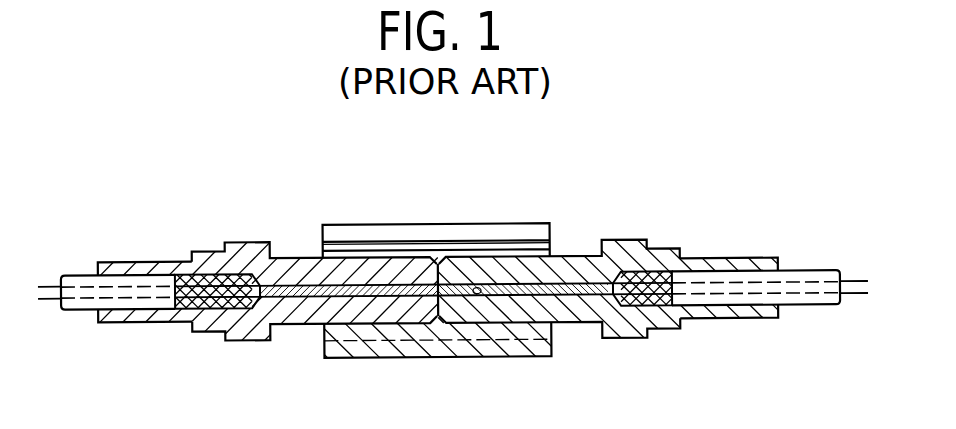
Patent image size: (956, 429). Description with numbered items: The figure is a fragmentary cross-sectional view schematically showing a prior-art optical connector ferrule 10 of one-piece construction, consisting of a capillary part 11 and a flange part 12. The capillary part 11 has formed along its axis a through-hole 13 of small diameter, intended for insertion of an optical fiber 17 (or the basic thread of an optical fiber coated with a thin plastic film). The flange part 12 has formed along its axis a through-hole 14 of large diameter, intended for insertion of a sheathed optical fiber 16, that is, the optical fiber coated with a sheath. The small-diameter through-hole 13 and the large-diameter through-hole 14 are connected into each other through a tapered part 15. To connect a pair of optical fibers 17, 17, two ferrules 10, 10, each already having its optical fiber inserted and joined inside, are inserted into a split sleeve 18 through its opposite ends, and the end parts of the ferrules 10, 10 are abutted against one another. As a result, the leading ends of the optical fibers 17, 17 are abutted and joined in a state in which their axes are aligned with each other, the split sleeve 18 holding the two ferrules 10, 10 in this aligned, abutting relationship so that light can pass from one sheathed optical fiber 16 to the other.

The optical connector ferrule 10 is at (430, 251).
The capillary part 11 is at (294, 257).
The flange part 12 is at (117, 262).
The through-hole of small diameter 13 is at (476, 300).
The through-hole of large diameter 14 is at (728, 303).
The tapered part 15 is at (630, 306).
The sheathed optical fiber 16 is at (83, 311).
The optical fiber 17 is at (293, 306).
The split sleeve 18 is at (435, 223).